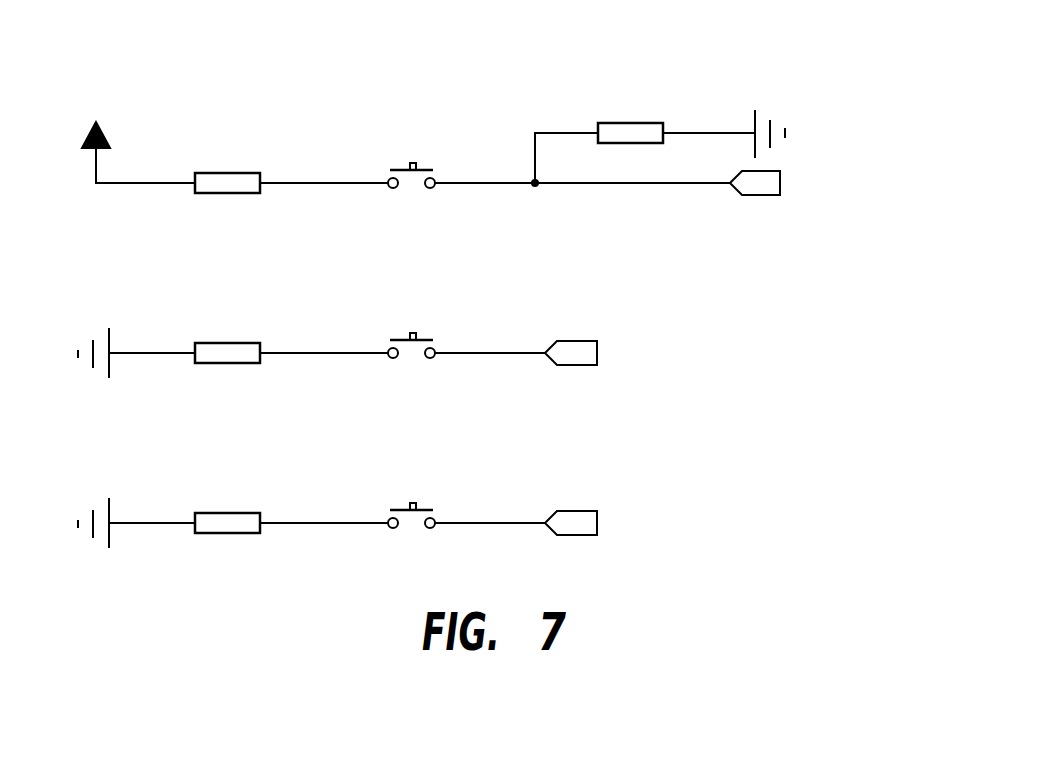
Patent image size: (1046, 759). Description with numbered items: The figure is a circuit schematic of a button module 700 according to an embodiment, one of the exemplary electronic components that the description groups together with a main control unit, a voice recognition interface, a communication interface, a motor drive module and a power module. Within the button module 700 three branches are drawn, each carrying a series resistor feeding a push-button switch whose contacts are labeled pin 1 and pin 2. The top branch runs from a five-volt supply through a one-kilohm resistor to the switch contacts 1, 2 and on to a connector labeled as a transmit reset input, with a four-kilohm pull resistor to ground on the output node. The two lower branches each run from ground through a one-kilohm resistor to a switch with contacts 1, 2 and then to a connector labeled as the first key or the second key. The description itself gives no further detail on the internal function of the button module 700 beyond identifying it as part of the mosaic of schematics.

The button module 700 is at (425, 80).
The switch pin 1 is at (377, 343).
The switch pin 2 is at (449, 343).